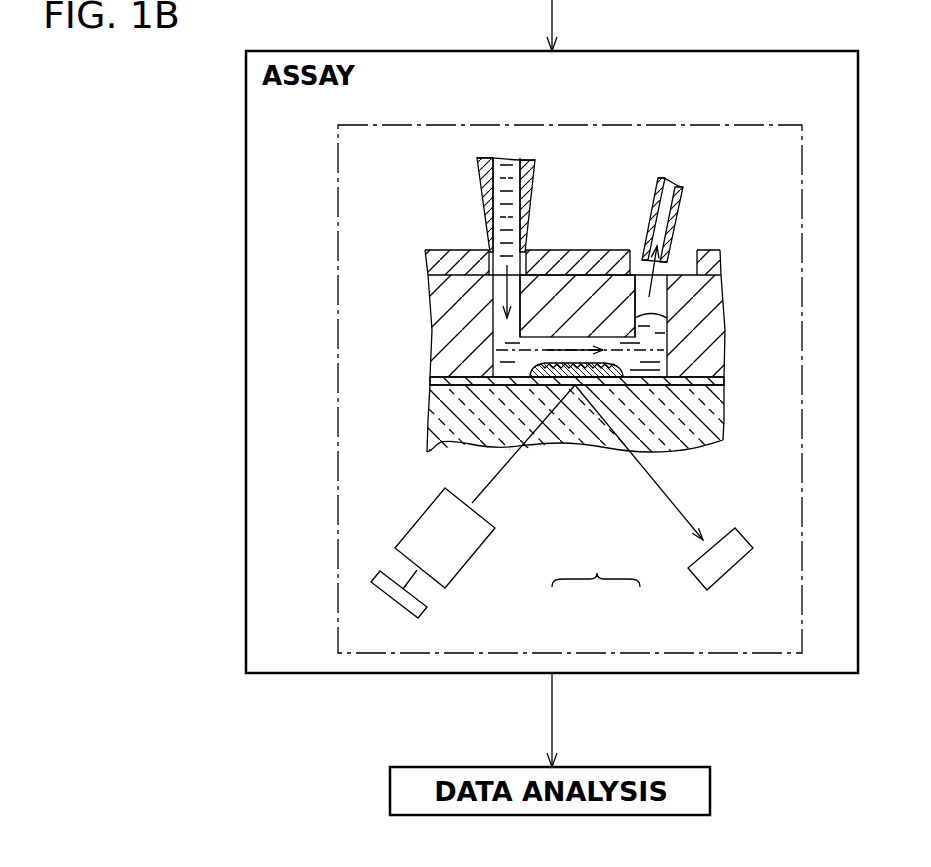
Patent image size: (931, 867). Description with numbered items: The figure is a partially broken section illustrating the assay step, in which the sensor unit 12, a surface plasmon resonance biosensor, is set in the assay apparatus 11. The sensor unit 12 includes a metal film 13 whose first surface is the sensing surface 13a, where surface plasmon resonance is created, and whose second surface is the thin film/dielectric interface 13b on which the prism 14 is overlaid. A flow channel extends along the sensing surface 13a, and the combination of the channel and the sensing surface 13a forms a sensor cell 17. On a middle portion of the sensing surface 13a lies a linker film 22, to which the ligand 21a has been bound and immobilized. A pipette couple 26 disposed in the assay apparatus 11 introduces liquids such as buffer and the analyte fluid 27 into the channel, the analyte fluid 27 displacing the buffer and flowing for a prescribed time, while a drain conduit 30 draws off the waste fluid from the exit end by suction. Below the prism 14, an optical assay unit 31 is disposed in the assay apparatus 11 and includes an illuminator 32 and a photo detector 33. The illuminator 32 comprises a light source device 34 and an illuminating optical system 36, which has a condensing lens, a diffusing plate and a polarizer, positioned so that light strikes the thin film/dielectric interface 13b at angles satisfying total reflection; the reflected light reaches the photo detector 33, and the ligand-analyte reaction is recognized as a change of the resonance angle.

The assay apparatus 11 is at (338, 395).
The sensor unit 12 is at (742, 208).
The metal film 13 is at (735, 380).
The sensing surface 13a is at (492, 358).
The thin film/dielectric interface 13b is at (572, 387).
The prism 14 is at (710, 443).
The sensor cell 17 is at (672, 346).
The ligand 21a is at (497, 337).
The linker film 22 is at (619, 371).
The pipette couple 26 is at (485, 192).
The analyte fluid 27 is at (652, 330).
The drain conduit 30 is at (647, 203).
The optical assay unit 31 is at (596, 563).
The illuminator 32 is at (480, 581).
The photo detector 33 is at (690, 582).
The light source device 34 is at (388, 575).
The illuminating optical system 36 is at (417, 522).